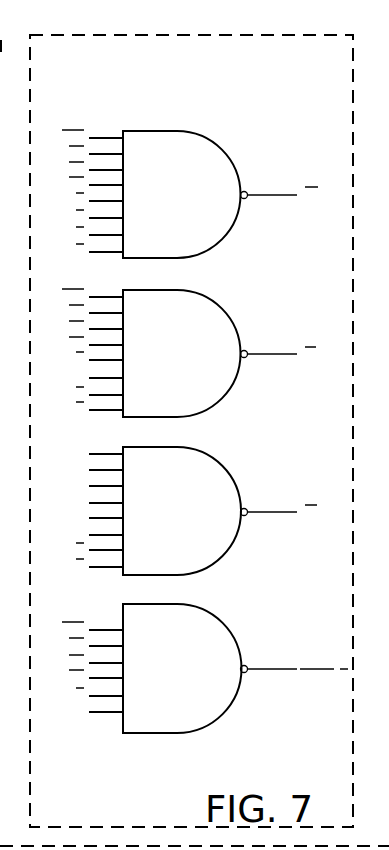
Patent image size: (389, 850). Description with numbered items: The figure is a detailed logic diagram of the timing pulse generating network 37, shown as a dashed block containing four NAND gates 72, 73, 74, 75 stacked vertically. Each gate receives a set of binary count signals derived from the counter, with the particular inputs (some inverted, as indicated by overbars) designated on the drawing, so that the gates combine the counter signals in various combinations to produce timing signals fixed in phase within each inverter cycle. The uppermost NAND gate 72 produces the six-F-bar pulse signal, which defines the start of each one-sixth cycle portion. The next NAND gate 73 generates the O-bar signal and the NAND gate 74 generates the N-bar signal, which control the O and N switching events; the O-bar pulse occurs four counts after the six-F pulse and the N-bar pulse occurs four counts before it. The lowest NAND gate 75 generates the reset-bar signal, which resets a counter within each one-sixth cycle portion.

The timing pulse generating network 37 is at (133, 36).
The NAND gate 72 is at (232, 158).
The NAND gate 73 is at (228, 312).
The NAND gate 74 is at (215, 454).
The NAND gate 75 is at (223, 620).